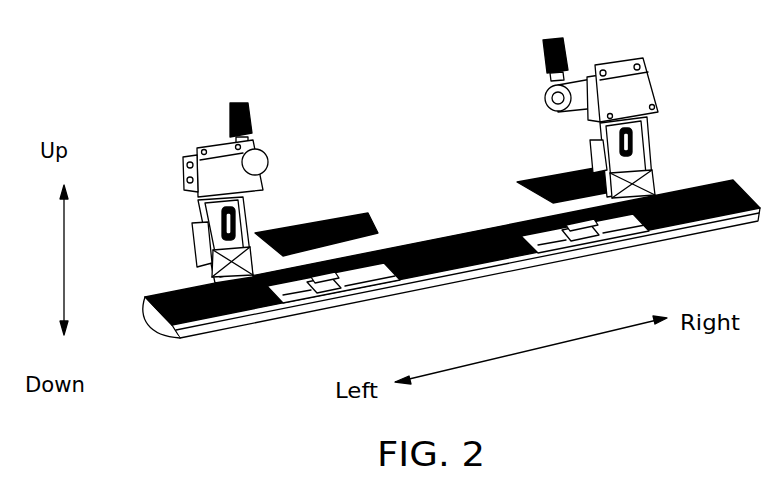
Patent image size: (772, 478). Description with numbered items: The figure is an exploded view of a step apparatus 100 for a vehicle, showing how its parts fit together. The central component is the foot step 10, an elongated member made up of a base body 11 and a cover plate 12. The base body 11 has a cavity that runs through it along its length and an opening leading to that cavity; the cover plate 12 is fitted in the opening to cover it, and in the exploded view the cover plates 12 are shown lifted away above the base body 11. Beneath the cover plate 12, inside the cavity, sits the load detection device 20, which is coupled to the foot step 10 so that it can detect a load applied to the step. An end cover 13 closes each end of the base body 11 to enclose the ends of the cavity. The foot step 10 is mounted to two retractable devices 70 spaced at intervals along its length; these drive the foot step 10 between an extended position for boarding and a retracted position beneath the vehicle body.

The step apparatus 100 is at (216, 42).
The foot step 10 is at (439, 276).
The base body 11 is at (248, 318).
The cover plate 12 is at (336, 218).
The end cover 13 is at (163, 326).
The load detection device 20 is at (322, 282).
The retractable device 70 is at (195, 228).